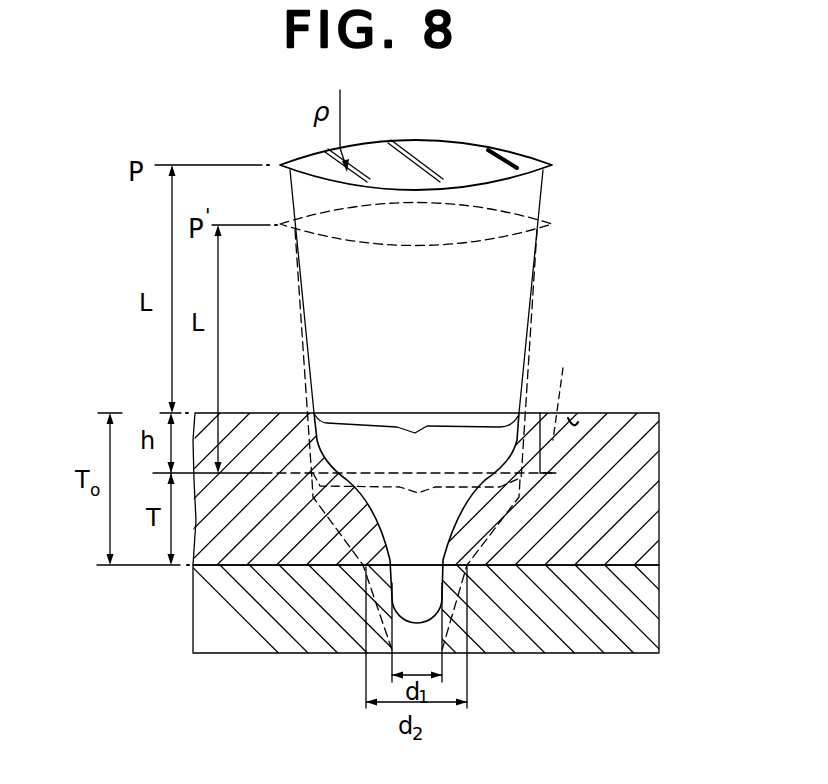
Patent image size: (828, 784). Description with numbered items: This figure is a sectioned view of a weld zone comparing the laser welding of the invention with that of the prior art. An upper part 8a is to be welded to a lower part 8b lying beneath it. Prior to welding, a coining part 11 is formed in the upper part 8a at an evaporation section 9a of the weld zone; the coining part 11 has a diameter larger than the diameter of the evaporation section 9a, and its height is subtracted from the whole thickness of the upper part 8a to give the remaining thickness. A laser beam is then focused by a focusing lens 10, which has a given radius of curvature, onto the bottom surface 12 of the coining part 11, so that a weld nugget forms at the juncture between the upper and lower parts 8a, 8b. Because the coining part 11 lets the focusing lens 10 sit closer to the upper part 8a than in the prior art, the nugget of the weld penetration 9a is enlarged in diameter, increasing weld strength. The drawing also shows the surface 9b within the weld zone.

The focusing lens 10 is at (485, 149).
The upper part 8a is at (635, 427).
The lower part 8b is at (645, 611).
The evaporation section 9a is at (345, 542).
The bottom surface of recess 9b is at (422, 487).
The coining part 11 is at (571, 420).
The bottom surface 12 is at (543, 413).